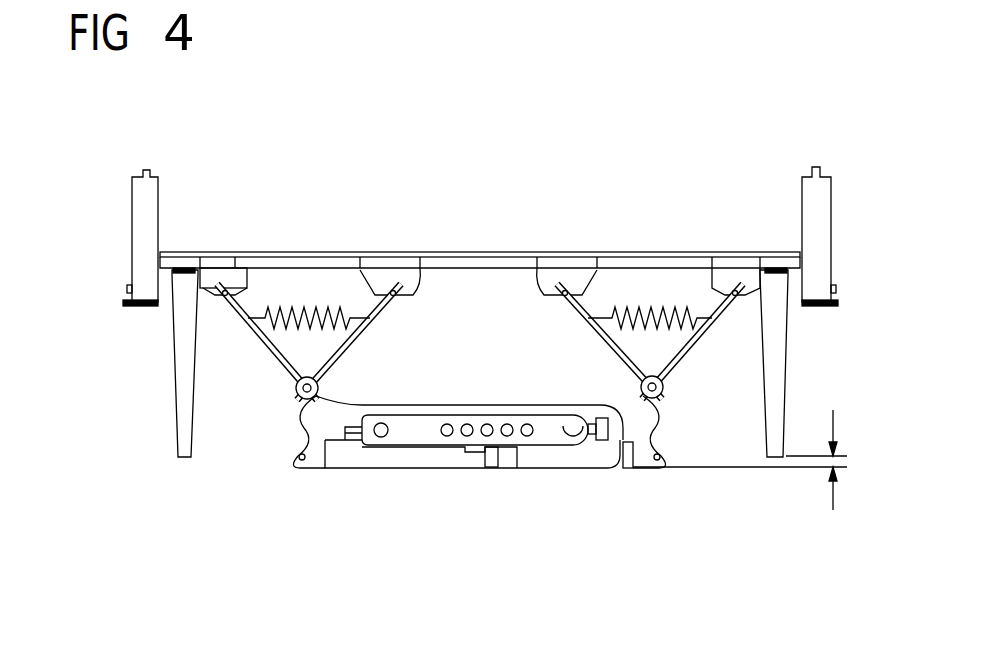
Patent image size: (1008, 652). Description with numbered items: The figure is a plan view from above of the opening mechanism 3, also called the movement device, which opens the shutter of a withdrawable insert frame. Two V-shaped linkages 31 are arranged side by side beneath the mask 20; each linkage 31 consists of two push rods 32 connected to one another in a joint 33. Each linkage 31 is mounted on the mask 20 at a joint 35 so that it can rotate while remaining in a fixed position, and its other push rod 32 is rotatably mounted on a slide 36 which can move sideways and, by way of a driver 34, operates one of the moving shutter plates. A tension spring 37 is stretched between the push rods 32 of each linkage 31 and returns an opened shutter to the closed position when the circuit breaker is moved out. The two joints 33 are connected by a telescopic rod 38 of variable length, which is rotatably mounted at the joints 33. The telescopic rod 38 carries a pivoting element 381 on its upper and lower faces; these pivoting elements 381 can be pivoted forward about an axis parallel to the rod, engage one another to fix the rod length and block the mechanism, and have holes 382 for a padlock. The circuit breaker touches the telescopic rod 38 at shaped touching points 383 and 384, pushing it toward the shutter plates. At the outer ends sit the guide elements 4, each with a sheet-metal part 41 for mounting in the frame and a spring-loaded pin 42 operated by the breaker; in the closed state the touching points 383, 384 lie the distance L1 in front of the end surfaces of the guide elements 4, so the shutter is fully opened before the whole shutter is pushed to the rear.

The opening mechanism 3 is at (456, 488).
The guide element 4 is at (461, 313).
The mask 20 is at (215, 262).
The V-shaped linkage 31 is at (549, 309).
The push rod 32 is at (682, 358).
The joint 33 is at (297, 395).
The driver 34 is at (760, 290).
The joint 35 is at (530, 252).
The slide 36 is at (752, 276).
The tension spring 37 is at (326, 308).
The telescopic rod 38 is at (330, 432).
The sheet-metal part 41 is at (140, 238).
The pin 42 is at (180, 440).
The pivoting element 381 is at (547, 437).
The hole 382 is at (490, 437).
The touching point 383 is at (303, 470).
The touching point 384 is at (640, 470).
The distance L1 is at (758, 460).